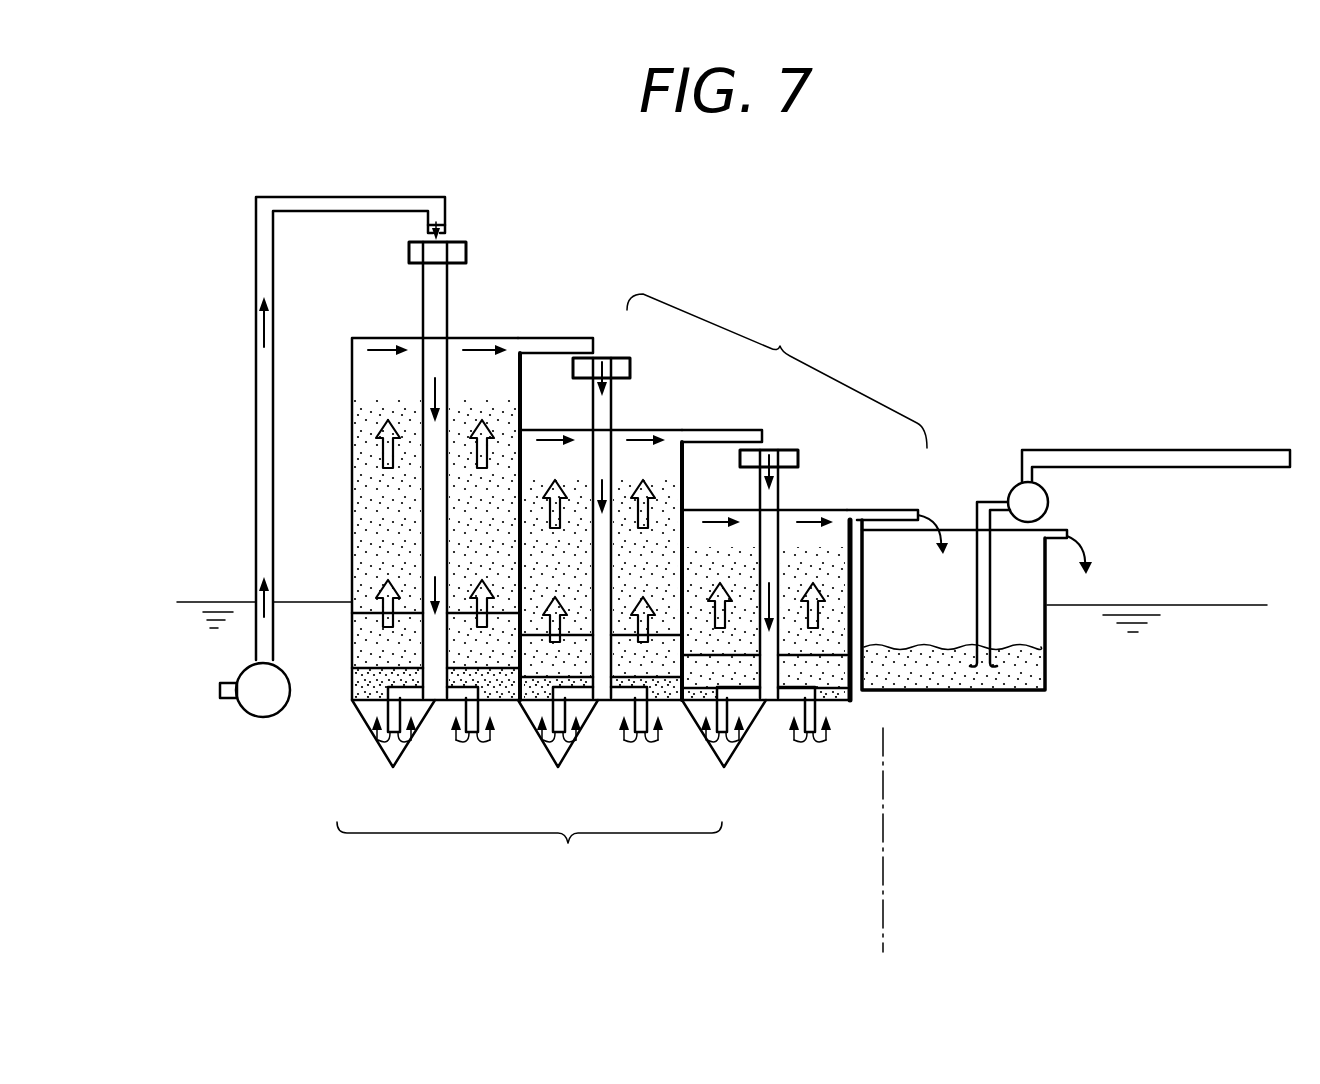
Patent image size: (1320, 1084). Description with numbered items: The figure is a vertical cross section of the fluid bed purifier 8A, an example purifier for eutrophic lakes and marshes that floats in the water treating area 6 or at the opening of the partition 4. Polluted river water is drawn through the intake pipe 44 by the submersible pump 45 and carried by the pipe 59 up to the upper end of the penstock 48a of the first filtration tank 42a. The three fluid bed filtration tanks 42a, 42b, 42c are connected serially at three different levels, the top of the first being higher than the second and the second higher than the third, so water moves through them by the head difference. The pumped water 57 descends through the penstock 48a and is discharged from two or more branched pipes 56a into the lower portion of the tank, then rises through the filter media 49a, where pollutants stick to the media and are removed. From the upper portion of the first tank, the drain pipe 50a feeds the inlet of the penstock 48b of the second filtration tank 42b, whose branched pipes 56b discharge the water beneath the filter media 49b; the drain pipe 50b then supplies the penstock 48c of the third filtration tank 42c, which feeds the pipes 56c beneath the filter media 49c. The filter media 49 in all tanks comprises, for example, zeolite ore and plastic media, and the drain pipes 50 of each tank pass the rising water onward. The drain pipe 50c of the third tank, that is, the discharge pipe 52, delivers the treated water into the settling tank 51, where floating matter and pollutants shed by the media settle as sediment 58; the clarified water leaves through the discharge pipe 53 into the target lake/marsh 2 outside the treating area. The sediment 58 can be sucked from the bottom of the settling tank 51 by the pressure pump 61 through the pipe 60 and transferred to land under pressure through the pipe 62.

The target lake/marsh 2 is at (1218, 605).
The partition 4 is at (886, 922).
The water treating area 6 is at (200, 602).
The fluid bed purifier 8A is at (763, 285).
The first filtration tank 42a is at (505, 372).
The second filtration tank 42b is at (668, 455).
The third filtration tank 42c is at (834, 540).
The intake pipe 44 is at (220, 690).
The submersible pump 45 is at (275, 713).
The penstock 48a is at (452, 300).
The penstock 48b is at (613, 412).
The penstock 48c is at (800, 480).
The filter media 49 is at (529, 848).
The filter media 49a is at (380, 688).
The filter media 49b is at (537, 705).
The filter media 49c is at (702, 705).
The drain pipes 50 is at (777, 371).
The drain pipe 50a is at (574, 340).
The drain pipe 50b is at (736, 438).
The drain pipe 50c is at (866, 520).
The settling tank 51 is at (917, 692).
The discharge pipe 52 is at (918, 514).
The discharge pipe 53 is at (1068, 529).
The pipes 56a is at (442, 705).
The pipes 56b is at (610, 705).
The pipes 56c is at (768, 705).
The water 57 is at (447, 237).
The sediment 58 is at (1018, 682).
The pipe 59 is at (307, 200).
The pipe 60 is at (985, 500).
The pressure pump 61 is at (1049, 498).
The pipe 62 is at (1156, 450).